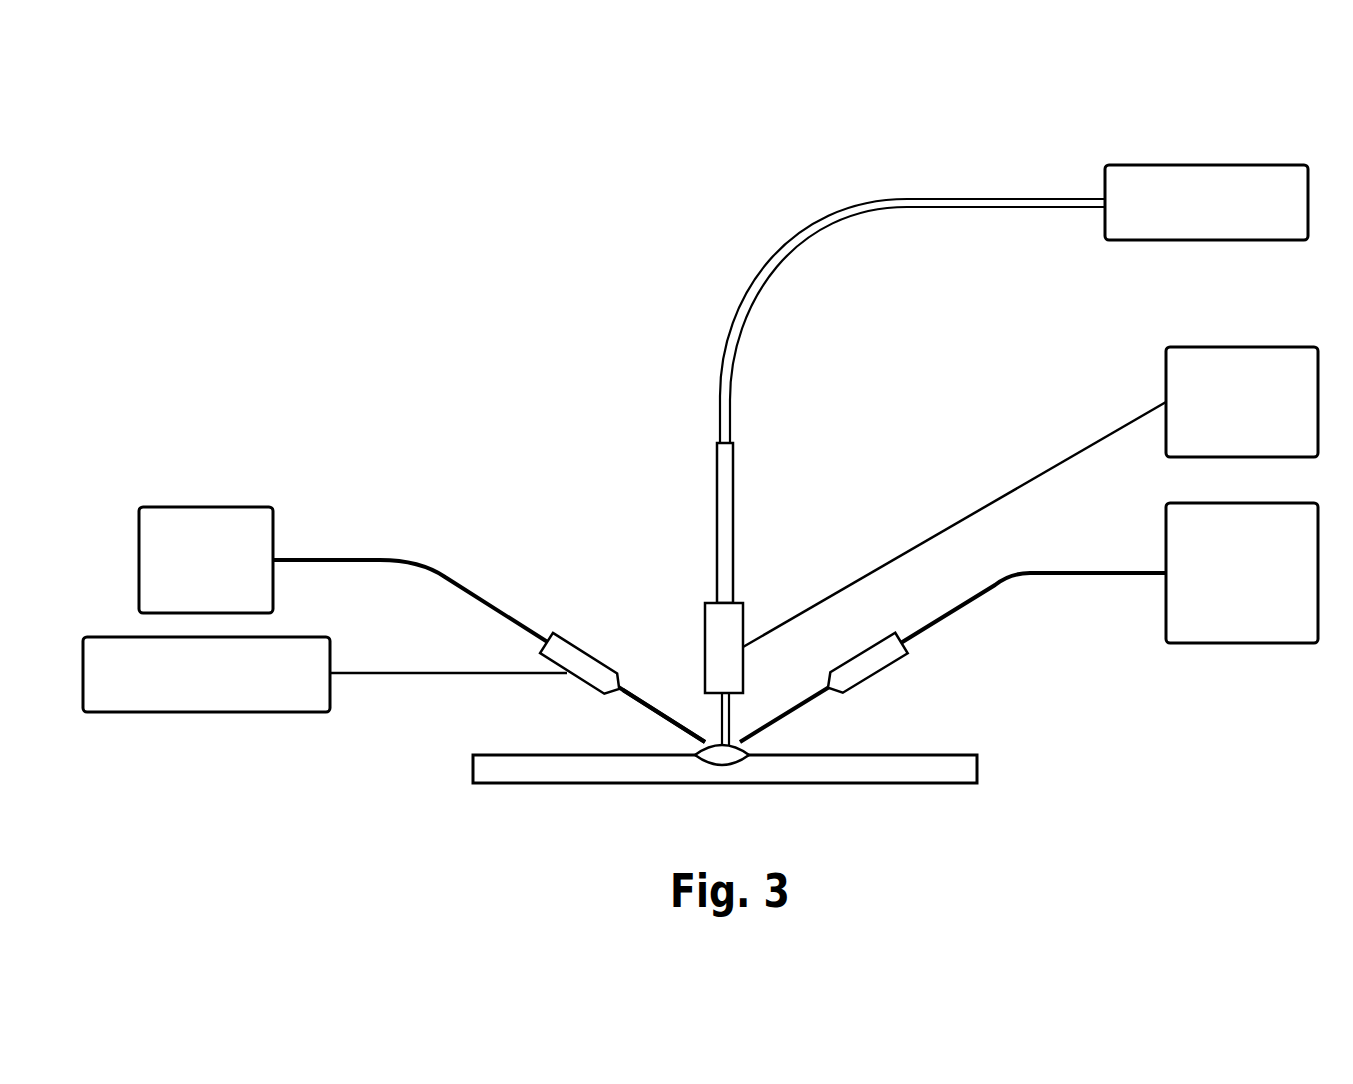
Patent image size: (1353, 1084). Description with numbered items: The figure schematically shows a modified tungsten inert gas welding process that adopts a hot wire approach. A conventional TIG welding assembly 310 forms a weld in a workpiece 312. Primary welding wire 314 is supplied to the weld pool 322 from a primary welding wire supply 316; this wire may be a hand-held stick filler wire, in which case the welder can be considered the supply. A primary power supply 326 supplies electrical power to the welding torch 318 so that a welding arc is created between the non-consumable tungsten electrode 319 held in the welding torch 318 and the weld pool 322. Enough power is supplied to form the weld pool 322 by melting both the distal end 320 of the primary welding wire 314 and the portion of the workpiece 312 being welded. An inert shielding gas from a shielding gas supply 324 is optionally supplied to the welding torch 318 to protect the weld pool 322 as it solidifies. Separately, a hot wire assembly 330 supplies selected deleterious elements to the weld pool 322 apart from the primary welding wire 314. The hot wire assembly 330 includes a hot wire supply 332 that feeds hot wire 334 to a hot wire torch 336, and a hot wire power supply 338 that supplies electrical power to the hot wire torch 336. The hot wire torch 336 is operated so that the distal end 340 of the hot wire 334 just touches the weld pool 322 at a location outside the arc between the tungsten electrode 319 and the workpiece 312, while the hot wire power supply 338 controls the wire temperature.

The TIG welding assembly 310 is at (815, 184).
The workpiece 312 is at (858, 768).
The primary welding wire 314 is at (952, 612).
The primary welding wire supply 316 is at (1166, 542).
The welding torch 318 is at (733, 627).
The non-consumable tungsten electrode 319 is at (730, 718).
The distal end of primary welding wire 320 is at (798, 711).
The weld pool 322 is at (728, 758).
The shielding gas supply 324 is at (1206, 165).
The primary power supply 326 is at (1166, 372).
The hot wire assembly 330 is at (340, 423).
The hot wire supply 332 is at (205, 507).
The hot wire 334 is at (450, 578).
The hot wire torch 336 is at (583, 648).
The hot wire power supply 338 is at (205, 712).
The distal end of hot wire 340 is at (650, 711).